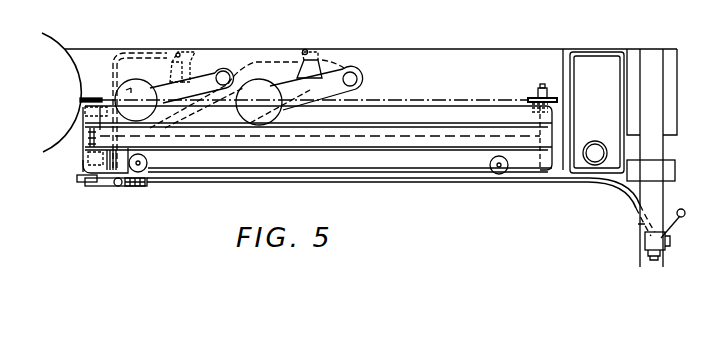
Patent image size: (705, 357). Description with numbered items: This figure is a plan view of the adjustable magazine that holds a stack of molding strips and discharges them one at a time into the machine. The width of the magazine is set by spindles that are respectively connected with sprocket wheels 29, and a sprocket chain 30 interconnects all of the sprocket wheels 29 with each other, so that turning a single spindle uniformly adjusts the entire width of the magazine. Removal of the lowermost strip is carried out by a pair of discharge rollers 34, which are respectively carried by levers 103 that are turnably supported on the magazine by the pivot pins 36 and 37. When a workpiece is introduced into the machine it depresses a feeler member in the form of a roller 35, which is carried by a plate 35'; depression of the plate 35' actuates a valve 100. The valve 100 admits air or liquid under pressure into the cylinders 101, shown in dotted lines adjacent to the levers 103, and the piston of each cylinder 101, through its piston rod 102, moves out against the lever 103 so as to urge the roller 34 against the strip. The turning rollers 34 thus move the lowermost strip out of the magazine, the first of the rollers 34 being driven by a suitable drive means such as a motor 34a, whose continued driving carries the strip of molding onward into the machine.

The sprocket wheel 29 is at (537, 96).
The sprocket chain 30 is at (452, 100).
The discharge roller 34 is at (139, 90).
The motor 34a is at (115, 93).
The roller 35 is at (112, 195).
The plate 35' is at (71, 168).
The pivot pin 36 is at (223, 72).
The pivot pin 37 is at (352, 74).
The valve 100 is at (120, 185).
The cylinder 101 is at (167, 62).
The piston rod 102 is at (190, 62).
The lever 103 is at (167, 92).